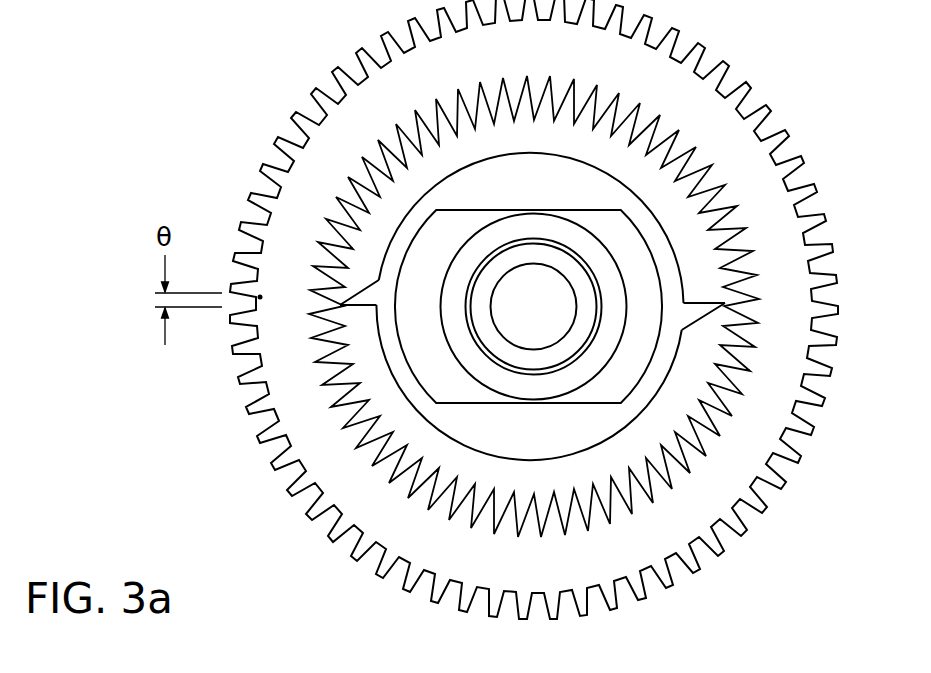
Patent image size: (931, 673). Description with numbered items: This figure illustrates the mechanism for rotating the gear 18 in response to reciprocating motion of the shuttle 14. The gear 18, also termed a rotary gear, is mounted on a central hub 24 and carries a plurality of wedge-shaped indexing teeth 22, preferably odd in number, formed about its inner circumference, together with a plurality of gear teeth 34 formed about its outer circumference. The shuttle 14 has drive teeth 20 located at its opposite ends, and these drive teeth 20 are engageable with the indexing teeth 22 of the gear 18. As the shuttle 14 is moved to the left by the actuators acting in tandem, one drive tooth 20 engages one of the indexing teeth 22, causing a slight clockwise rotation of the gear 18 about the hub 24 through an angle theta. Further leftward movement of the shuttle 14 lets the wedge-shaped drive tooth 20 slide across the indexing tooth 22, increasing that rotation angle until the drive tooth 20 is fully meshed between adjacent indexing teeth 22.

The shuttle 14 is at (532, 306).
The gear 18 is at (513, 326).
The drive tooth 20 is at (363, 300).
The indexing teeth 22 is at (320, 302).
The hub 24 is at (550, 321).
The gear teeth 34 is at (262, 174).